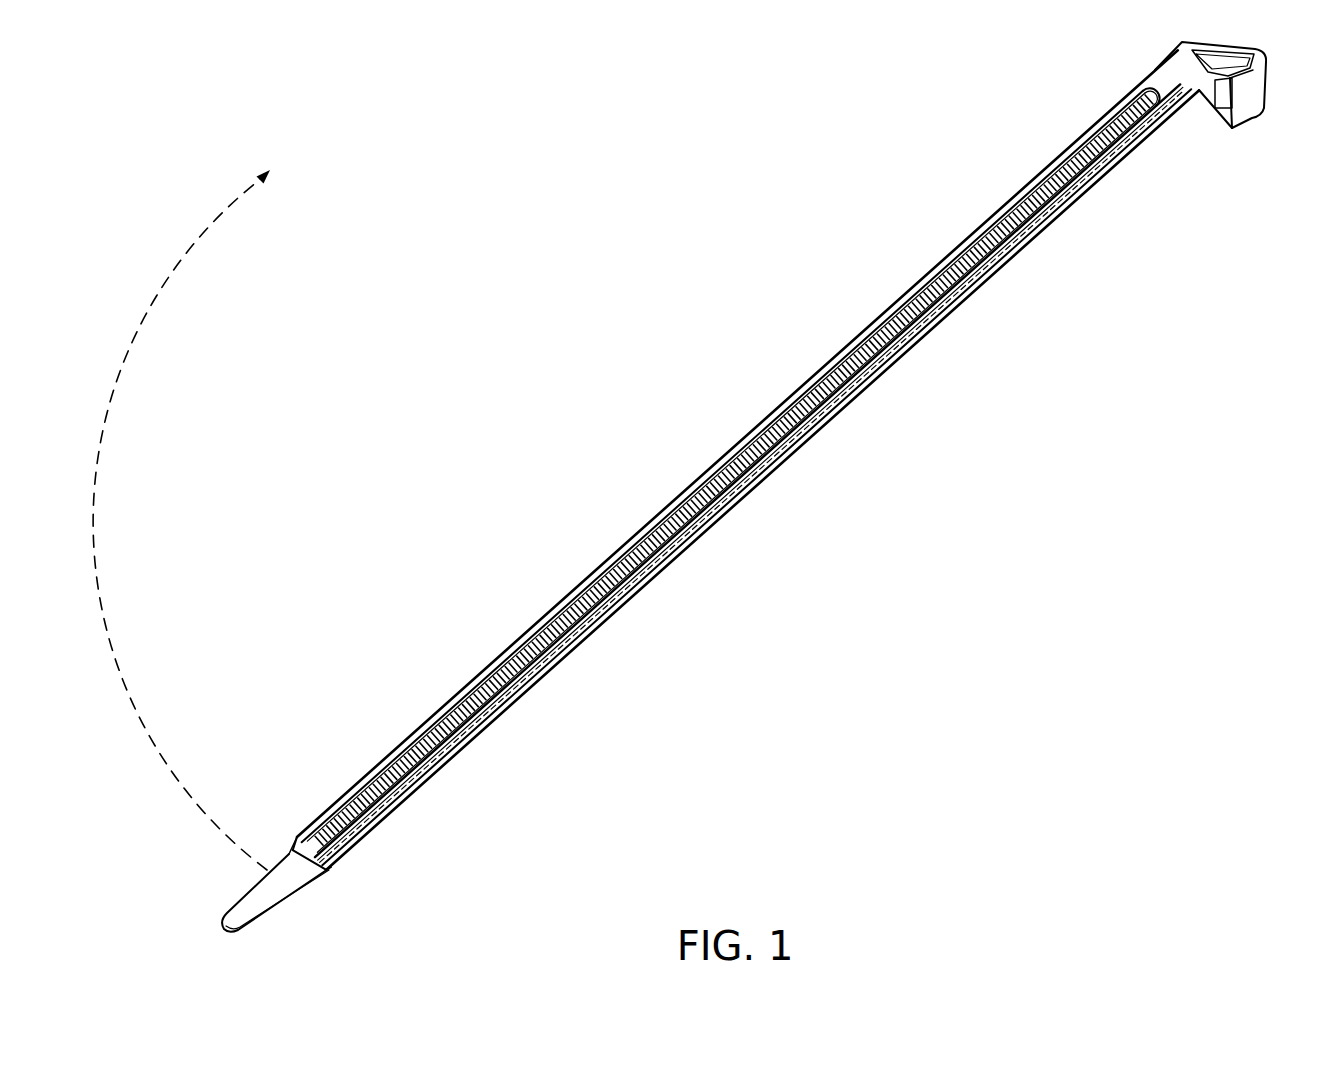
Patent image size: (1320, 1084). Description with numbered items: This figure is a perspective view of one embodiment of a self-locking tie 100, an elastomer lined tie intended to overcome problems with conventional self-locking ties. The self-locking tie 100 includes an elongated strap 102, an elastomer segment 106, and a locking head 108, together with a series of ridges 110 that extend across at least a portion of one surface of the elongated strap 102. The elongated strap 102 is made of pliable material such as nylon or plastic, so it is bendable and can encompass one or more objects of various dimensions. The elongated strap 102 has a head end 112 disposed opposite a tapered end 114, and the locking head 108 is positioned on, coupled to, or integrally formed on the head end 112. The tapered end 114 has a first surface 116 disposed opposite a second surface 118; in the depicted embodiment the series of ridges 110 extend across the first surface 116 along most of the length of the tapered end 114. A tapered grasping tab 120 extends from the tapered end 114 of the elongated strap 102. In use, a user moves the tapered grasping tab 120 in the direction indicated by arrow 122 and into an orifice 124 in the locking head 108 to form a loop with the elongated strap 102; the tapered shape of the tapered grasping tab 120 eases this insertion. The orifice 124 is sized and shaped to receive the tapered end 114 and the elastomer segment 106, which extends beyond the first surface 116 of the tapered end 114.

The self-locking tie 100 is at (428, 207).
The elongated strap 102 is at (768, 410).
The elastomer segment 106 is at (447, 706).
The locking head 108 is at (1250, 85).
The series of ridges 110 is at (630, 553).
The head end 112 is at (1210, 92).
The tapered end 114 is at (280, 880).
The first surface 116 is at (247, 893).
The second surface 118 is at (552, 705).
The tapered grasping tab 120 is at (298, 877).
The arrow 122 is at (95, 522).
The orifice 124 is at (1217, 57).